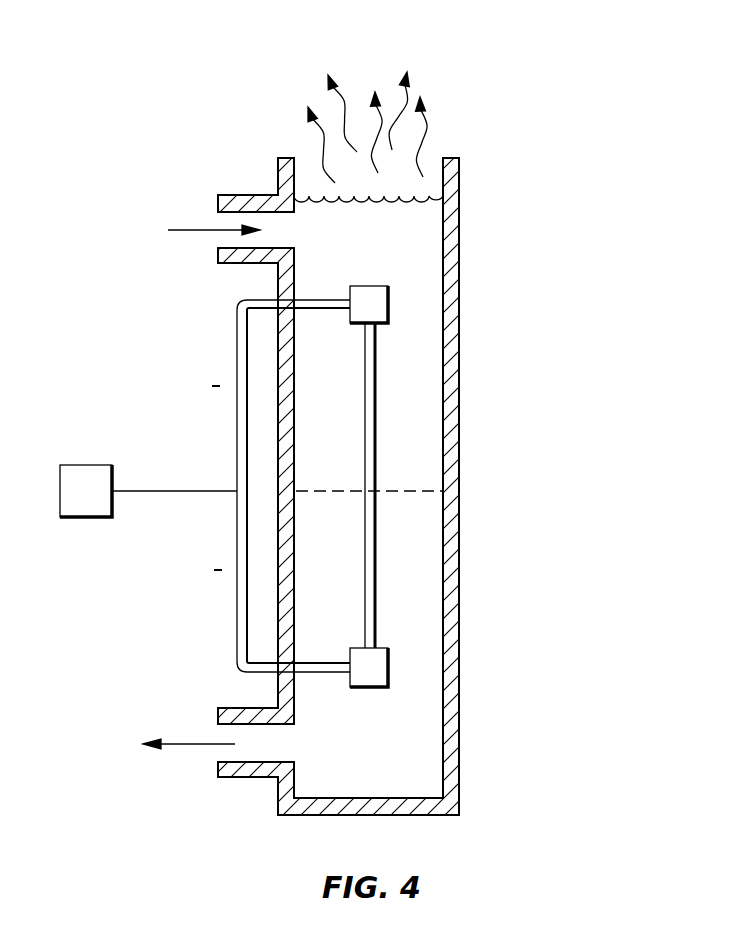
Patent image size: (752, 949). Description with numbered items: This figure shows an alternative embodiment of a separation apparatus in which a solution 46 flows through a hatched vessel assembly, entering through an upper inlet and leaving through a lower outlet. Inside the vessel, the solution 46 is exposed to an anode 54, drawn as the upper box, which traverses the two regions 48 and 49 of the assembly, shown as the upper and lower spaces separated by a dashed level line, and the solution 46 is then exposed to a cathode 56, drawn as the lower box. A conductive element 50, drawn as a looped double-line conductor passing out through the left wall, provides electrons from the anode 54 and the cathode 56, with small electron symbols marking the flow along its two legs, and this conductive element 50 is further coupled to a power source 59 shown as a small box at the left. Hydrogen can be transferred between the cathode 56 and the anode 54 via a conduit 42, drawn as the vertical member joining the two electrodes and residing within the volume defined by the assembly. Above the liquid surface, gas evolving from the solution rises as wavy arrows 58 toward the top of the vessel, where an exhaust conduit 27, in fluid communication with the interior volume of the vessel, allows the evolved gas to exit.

The exhaust conduit 27 is at (459, 178).
The conduit 42 is at (370, 593).
The solution 46 is at (190, 230).
The region 48 is at (412, 375).
The region 49 is at (412, 625).
The conductive element 50 is at (237, 444).
The anode 54 is at (370, 308).
The cathode 56 is at (367, 667).
The gas bubbles 58 is at (373, 138).
The power source 59 is at (99, 504).